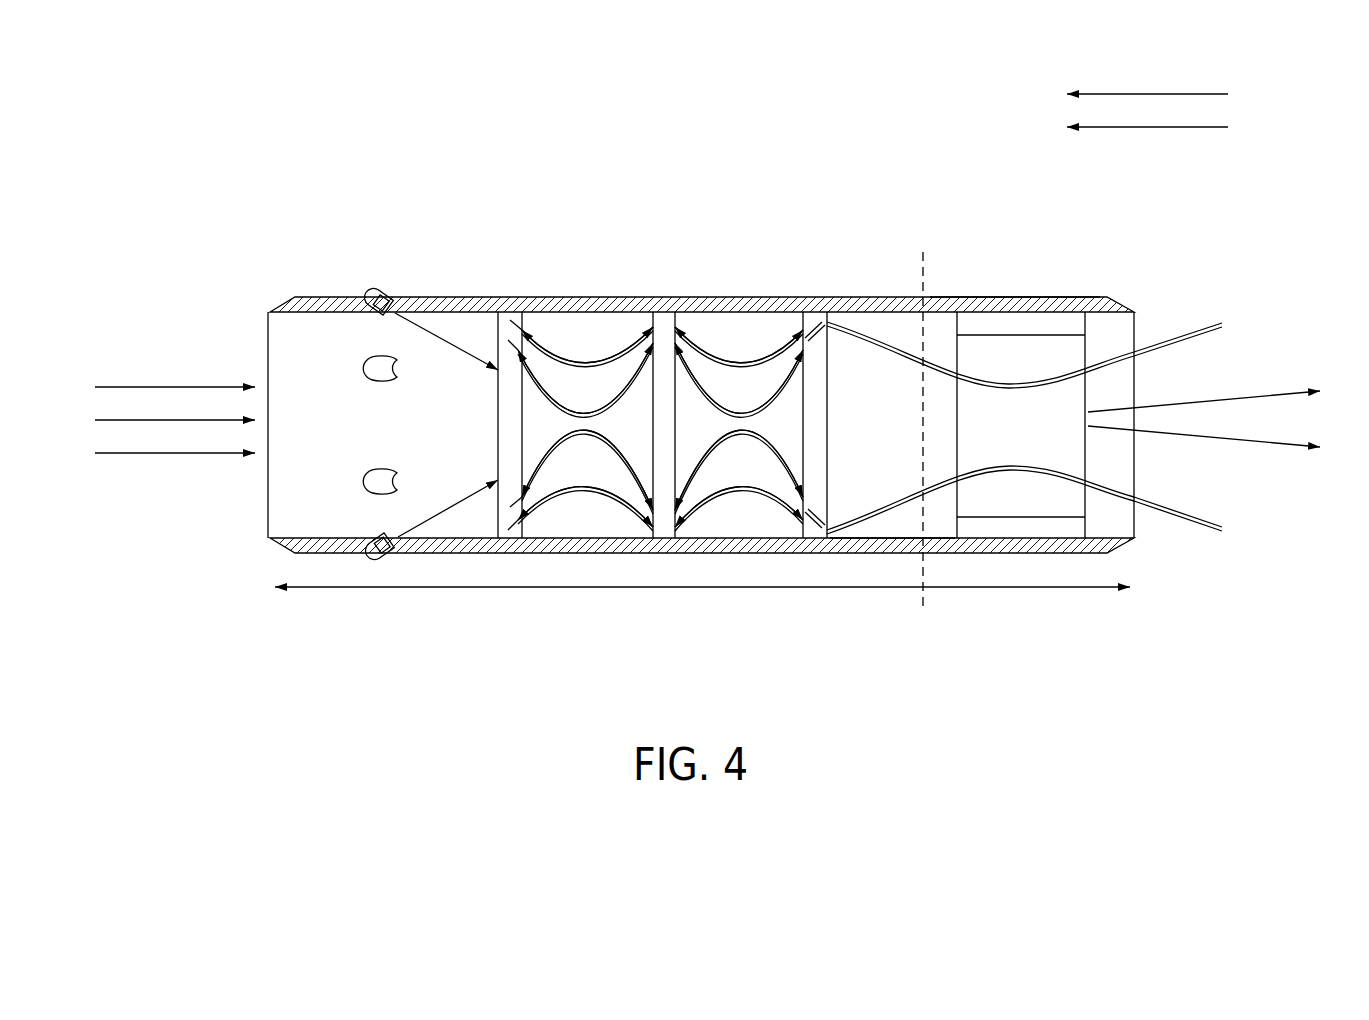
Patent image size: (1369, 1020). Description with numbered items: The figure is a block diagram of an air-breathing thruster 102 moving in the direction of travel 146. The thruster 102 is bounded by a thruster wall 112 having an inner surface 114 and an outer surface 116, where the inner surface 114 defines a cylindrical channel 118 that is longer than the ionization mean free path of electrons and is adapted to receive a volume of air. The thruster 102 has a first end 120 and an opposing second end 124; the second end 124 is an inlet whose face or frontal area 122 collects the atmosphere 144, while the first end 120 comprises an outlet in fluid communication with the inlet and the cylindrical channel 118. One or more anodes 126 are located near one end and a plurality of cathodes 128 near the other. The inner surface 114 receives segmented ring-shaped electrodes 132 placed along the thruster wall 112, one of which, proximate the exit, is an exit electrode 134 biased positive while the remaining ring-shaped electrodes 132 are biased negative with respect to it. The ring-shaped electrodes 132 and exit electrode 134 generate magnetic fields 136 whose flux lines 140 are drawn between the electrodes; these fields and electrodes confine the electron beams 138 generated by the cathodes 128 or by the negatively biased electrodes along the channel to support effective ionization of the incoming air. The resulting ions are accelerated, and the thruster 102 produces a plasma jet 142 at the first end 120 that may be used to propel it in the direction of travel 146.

The thruster 102 is at (700, 283).
The thruster wall 112 is at (694, 470).
The inner surface 114 is at (498, 312).
The outer surface 116 is at (855, 553).
The cylindrical channel 118 is at (890, 525).
The first end 120 is at (1134, 326).
The frontal area 122 is at (268, 523).
The second end 124 is at (268, 327).
The anode 126 is at (1015, 300).
The cathodes 128 is at (355, 275).
The ring-shaped electrodes 132 is at (657, 303).
The exit electrode 134 is at (520, 538).
The magnetic fields 136 is at (616, 522).
The electron beams 138 is at (437, 322).
The flux lines 140 is at (725, 338).
The plasma jet 142 is at (1366, 429).
The atmosphere 144 is at (80, 431).
The direction of travel 146 is at (1280, 121).